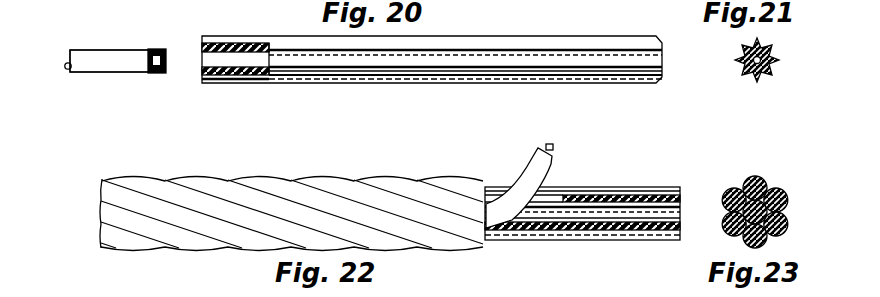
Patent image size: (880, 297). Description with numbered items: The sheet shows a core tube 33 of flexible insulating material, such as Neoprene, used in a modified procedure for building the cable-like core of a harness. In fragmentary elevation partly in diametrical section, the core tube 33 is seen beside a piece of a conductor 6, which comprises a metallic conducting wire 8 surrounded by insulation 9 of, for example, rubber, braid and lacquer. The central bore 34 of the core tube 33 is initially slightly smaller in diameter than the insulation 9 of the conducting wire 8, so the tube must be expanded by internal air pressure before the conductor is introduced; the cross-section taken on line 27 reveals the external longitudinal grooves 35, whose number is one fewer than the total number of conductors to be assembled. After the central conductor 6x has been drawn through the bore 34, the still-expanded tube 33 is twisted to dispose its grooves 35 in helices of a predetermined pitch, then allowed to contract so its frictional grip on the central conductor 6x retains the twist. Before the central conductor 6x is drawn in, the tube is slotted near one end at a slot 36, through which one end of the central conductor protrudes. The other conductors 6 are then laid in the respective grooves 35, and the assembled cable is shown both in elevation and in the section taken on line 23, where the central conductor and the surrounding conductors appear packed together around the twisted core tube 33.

In FIG. 20, the conductor 6 is at (115, 38).
In FIG. 22, the conductor 6 is at (290, 188).
In FIG. 20, the conducting wire 8 is at (156, 50).
In FIG. 20, the insulation 9 is at (78, 53).
In FIG. 20, the core tube 33 is at (218, 46).
In FIG. 20, the central bore 34 is at (250, 60).
In FIG. 20, the section line 27 is at (636, 110).
In FIG. 21, the external longitudinal grooves 35 is at (752, 78).
In FIG. 22, the slot 36 is at (550, 198).
In FIG. 22, the central conductor 6x is at (536, 164).
In FIG. 22, the section line 23 is at (445, 170).